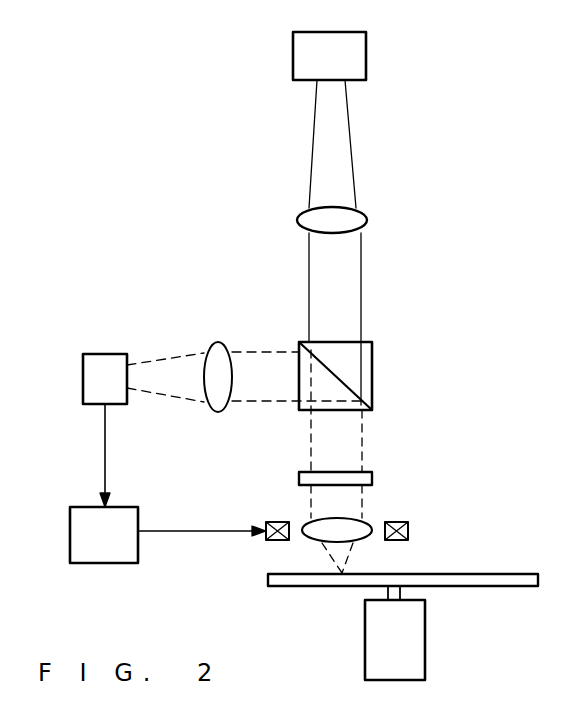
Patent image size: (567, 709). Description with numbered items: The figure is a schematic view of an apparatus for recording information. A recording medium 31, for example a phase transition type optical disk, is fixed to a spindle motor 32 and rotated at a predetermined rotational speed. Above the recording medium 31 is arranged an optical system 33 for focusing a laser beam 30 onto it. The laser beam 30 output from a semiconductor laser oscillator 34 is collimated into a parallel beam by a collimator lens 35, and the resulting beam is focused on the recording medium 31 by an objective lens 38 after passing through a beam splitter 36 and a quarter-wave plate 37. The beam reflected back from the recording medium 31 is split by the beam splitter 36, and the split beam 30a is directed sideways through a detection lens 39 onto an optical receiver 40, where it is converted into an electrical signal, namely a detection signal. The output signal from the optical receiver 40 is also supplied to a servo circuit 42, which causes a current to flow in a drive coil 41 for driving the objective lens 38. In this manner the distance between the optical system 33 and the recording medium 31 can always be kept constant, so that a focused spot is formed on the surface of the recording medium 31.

The laser beam 30 is at (355, 163).
The split beam 30a is at (268, 352).
The recording medium 31 is at (500, 587).
The spindle motor 32 is at (425, 665).
The optical system 33 is at (265, 259).
The semiconductor laser oscillator 34 is at (366, 58).
The collimator lens 35 is at (366, 215).
The beam splitter 36 is at (372, 378).
The λ/4 plate 37 is at (372, 478).
The objective lens 38 is at (322, 517).
The detection lens 39 is at (218, 342).
The optical receiver 40 is at (83, 372).
The drive coil 41 is at (270, 541).
The servo circuit 42 is at (70, 532).